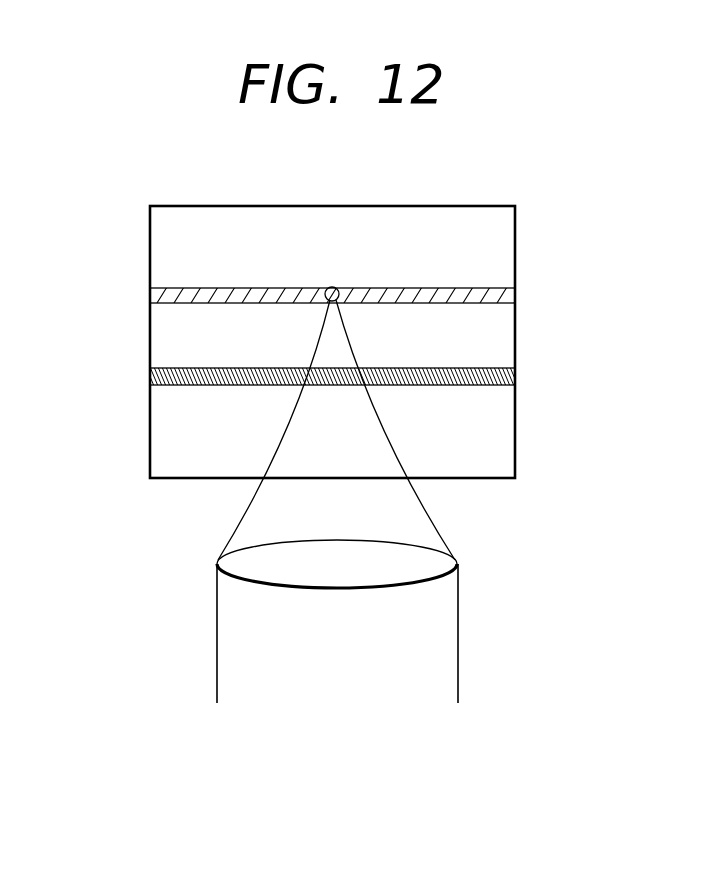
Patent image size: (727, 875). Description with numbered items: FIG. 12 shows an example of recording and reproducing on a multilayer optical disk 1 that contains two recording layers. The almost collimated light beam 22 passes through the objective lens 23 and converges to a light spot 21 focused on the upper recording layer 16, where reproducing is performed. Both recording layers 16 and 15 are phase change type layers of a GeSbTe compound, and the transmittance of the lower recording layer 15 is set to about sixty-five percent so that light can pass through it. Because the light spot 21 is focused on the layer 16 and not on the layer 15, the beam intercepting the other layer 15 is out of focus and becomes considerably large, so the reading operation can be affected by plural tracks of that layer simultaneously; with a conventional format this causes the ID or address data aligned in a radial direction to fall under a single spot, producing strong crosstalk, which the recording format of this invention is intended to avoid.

The recording medium 1 is at (121, 480).
The recording layer 15 is at (497, 373).
The recording layer 16 is at (497, 296).
The light spot 21 is at (333, 287).
The light beam 22 is at (433, 525).
The objective lens 23 is at (458, 560).